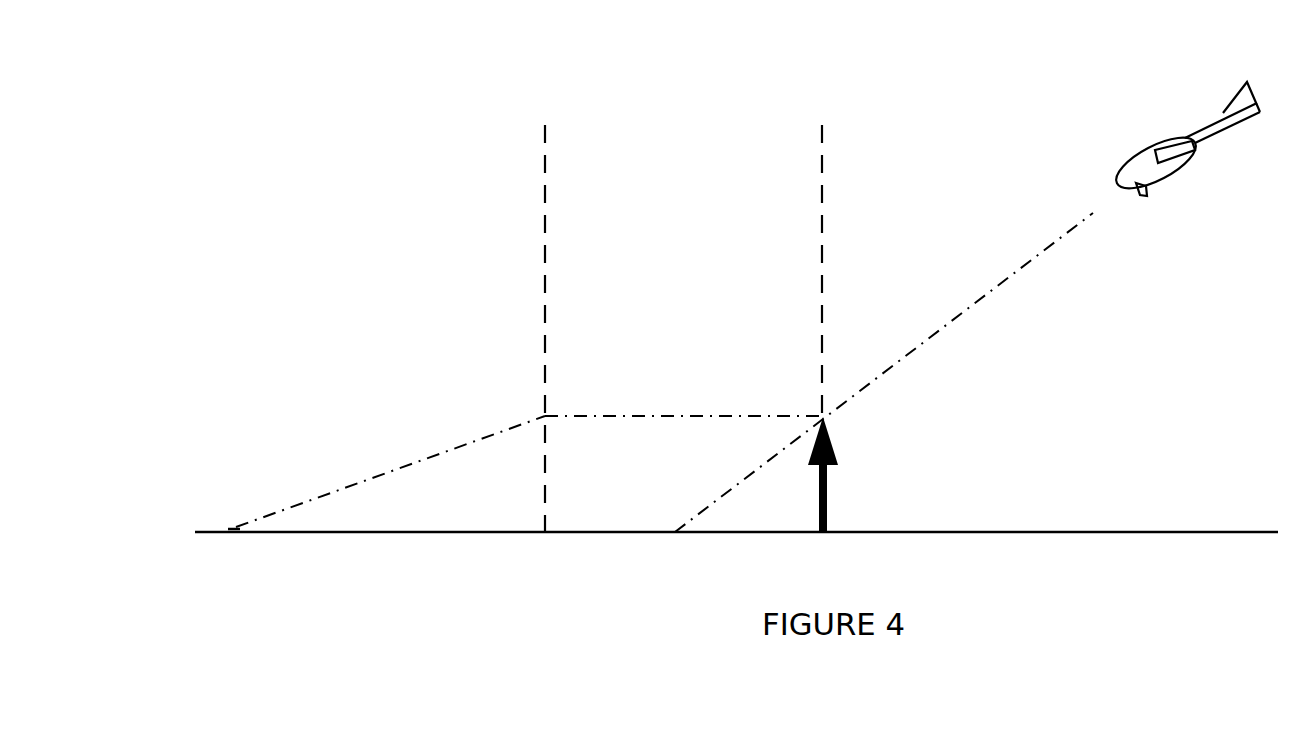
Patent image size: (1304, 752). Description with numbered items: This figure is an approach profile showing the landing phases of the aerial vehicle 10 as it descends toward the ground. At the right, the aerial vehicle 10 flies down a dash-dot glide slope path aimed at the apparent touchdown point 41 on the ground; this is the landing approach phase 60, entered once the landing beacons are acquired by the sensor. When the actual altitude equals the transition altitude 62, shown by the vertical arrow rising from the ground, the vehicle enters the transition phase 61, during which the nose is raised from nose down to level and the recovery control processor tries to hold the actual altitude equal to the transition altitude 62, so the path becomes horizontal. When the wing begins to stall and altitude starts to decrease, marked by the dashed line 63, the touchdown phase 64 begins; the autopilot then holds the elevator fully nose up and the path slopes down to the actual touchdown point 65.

The aerial vehicle 10 is at (1163, 151).
The apparent touchdown point 41 is at (675, 531).
The landing approach phase 60 is at (1044, 395).
The transition phase 61 is at (741, 344).
The transition altitude 62 is at (828, 480).
The dashed line 63 is at (600, 328).
The touchdown phase 64 is at (354, 331).
The touchdown point 65 is at (233, 532).